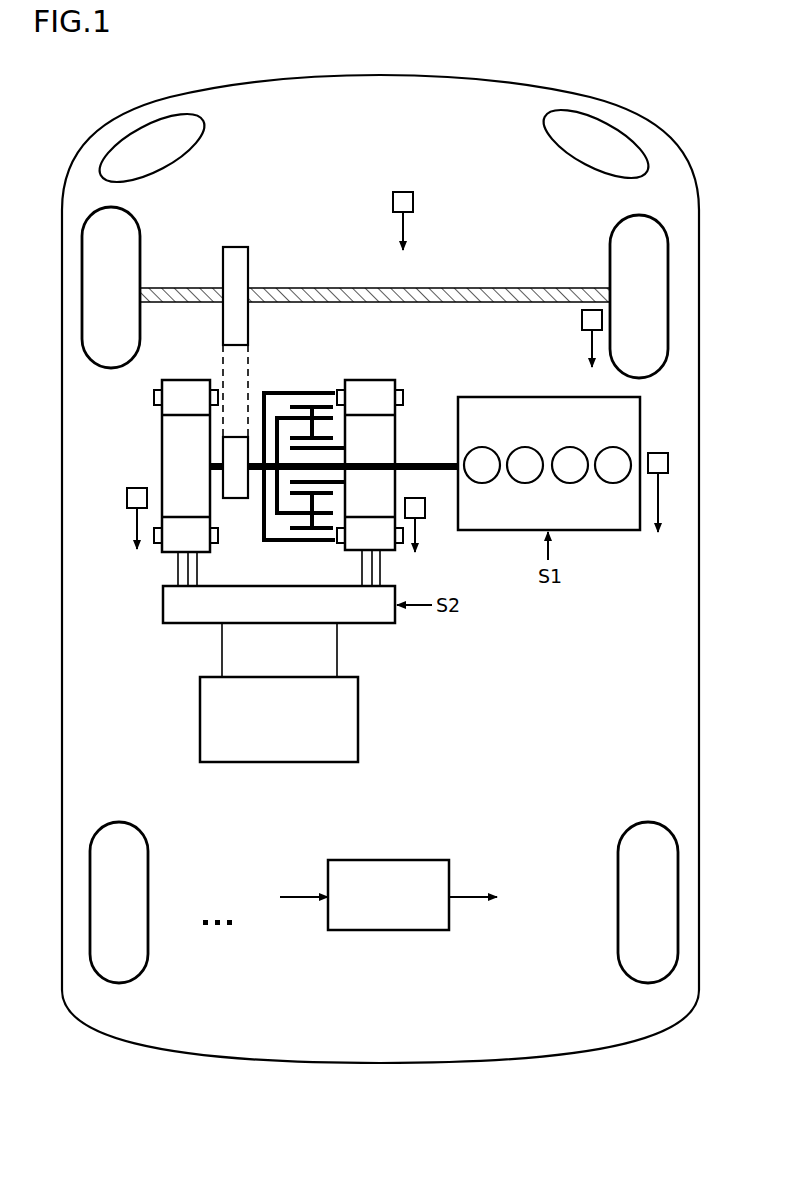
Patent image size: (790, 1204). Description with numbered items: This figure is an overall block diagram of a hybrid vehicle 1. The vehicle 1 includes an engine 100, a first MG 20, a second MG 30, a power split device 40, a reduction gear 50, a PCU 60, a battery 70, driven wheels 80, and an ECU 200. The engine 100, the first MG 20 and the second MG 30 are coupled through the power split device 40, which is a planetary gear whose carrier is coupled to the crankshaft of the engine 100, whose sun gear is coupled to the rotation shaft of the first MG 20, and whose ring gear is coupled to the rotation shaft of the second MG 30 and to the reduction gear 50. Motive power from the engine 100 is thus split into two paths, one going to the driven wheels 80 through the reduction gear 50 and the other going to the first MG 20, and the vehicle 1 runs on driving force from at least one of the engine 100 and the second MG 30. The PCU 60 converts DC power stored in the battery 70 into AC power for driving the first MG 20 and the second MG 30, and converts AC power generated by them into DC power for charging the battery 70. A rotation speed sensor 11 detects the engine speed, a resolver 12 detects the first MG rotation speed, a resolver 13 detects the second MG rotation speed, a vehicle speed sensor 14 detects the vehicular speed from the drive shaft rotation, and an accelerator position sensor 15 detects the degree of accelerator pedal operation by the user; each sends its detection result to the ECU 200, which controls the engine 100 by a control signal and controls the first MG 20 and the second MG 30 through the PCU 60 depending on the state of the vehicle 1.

The vehicle 1 is at (370, 47).
The rotation speed sensor 11 is at (659, 453).
The resolver 12 is at (415, 498).
The resolver 13 is at (138, 488).
The vehicle speed sensor 14 is at (582, 319).
The accelerator position sensor 15 is at (403, 192).
The first MG 20 is at (370, 380).
The second MG 30 is at (186, 380).
The power split device 40 is at (302, 393).
The reduction gear 50 is at (235, 247).
The PCU 60 is at (163, 603).
The battery 70 is at (200, 719).
The driven wheel 80 is at (621, 219).
The engine 100 is at (483, 397).
The ECU 200 is at (390, 932).